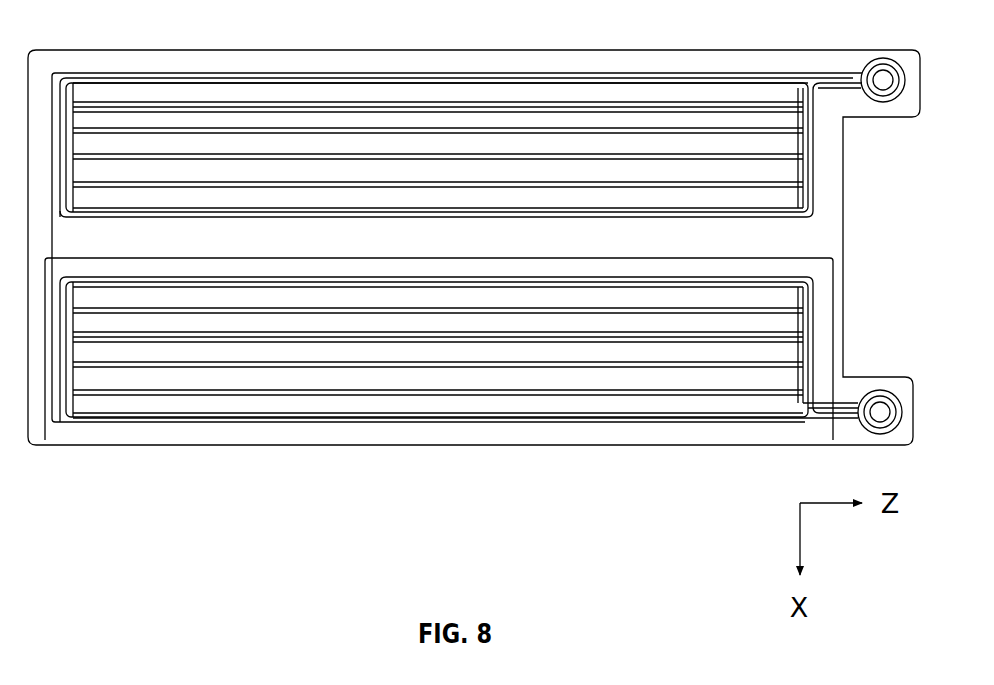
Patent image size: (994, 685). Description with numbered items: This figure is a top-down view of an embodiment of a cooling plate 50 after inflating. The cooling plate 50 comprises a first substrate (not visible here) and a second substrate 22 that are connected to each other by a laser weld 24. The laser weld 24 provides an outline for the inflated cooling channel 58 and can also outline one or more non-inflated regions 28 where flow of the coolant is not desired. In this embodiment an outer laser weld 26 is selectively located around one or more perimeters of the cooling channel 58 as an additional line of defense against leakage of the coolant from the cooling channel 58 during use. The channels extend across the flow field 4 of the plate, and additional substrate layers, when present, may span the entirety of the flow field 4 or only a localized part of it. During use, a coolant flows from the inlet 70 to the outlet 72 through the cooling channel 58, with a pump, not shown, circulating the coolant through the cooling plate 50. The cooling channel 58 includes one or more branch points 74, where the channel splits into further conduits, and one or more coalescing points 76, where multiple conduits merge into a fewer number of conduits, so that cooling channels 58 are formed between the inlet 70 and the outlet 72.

The flow field 4 is at (211, 96).
The second substrate 22 is at (116, 448).
The laser weld 24 is at (352, 73).
The outer laser weld 26 is at (146, 254).
The non-inflated region 28 is at (660, 82).
The cooling plate 50 is at (167, 479).
The cooling channel 58 is at (440, 78).
The inlet 70 is at (884, 86).
The outlet 72 is at (888, 398).
The branch point 74 is at (817, 70).
The coalescing point 76 is at (800, 407).